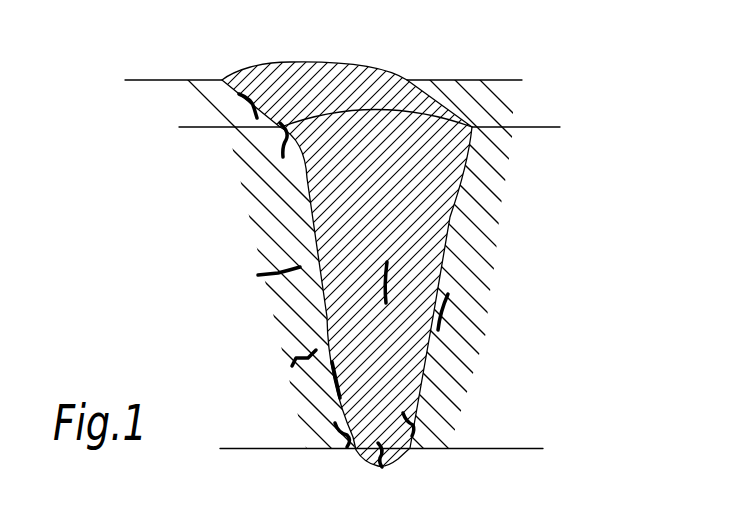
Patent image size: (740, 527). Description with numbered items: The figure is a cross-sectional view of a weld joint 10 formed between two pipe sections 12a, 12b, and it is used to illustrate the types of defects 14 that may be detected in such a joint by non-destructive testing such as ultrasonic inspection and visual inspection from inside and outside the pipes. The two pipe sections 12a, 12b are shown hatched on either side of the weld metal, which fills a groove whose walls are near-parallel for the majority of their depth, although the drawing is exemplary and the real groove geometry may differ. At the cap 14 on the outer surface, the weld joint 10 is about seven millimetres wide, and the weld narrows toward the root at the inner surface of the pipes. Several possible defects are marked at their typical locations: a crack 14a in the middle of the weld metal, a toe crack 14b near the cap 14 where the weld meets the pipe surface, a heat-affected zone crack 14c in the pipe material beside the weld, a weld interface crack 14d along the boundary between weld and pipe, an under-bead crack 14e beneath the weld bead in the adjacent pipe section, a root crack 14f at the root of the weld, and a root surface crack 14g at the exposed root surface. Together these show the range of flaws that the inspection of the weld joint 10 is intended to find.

The weld joint 10 is at (397, 68).
The pipe section 12a is at (188, 92).
The pipe section 12b is at (507, 280).
The cap 14 is at (292, 75).
The crack 14a is at (395, 273).
The toe crack 14b is at (277, 135).
The heat-affected zone crack 14c is at (292, 352).
The weld interface crack 14d is at (327, 385).
The under-bead crack 14e is at (447, 308).
The root crack 14f is at (341, 444).
The root surface crack 14g is at (385, 472).